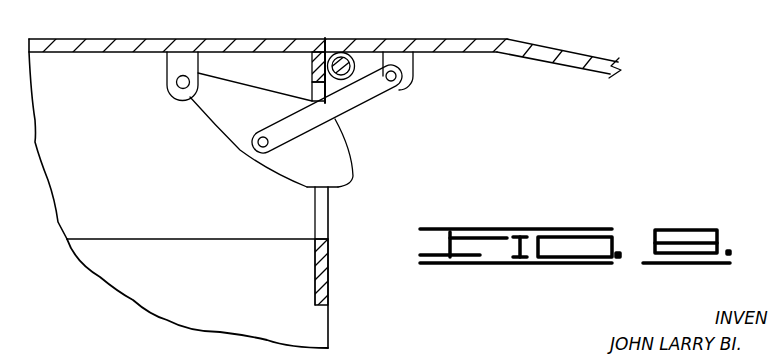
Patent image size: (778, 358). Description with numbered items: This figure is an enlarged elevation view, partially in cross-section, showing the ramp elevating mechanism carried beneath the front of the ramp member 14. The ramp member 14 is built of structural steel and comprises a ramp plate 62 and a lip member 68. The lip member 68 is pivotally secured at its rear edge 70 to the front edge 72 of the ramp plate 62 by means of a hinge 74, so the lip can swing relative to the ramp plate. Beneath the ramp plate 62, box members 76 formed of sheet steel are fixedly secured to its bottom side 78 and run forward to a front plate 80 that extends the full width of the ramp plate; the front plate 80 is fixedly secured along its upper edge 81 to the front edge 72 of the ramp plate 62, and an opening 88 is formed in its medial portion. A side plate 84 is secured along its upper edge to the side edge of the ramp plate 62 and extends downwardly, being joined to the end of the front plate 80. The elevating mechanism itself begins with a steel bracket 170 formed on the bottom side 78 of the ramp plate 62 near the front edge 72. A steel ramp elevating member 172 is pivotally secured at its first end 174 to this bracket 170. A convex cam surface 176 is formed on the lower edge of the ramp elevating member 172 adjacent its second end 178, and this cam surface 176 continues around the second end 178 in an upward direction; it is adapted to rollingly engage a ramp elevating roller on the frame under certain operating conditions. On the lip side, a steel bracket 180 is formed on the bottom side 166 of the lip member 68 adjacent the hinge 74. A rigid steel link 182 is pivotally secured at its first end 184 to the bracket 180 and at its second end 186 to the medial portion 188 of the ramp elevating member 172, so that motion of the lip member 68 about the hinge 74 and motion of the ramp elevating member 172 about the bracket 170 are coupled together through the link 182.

The ramp member 14 is at (100, 30).
The ramp plate 62 is at (47, 38).
The lip member 68 is at (563, 50).
The bottom side of the lip member 166 is at (556, 70).
The bottom side of the ramp plate 78 is at (58, 56).
The box members 76 is at (121, 241).
The side plate 84 is at (187, 334).
The front plate 80 is at (327, 262).
The steel bracket 170 is at (166, 72).
The first end of the ramp elevating member 174 is at (186, 102).
The ramp elevating member 172 is at (251, 112).
The medial portion of the ramp elevating member 188 is at (236, 143).
The convex cam surface 176 is at (298, 188).
The second end of the ramp elevating member 178 is at (356, 179).
The rigid steel link 182 is at (350, 108).
The second end of the link 186 is at (276, 145).
The first end of the link 184 is at (404, 90).
The steel bracket 180 is at (414, 66).
The front edge of the ramp plate 72 is at (325, 38).
The upper edge of the front plate 81 is at (312, 66).
The opening 88 is at (313, 84).
The rear edge of the lip member 70 is at (330, 38).
The hinge 74 is at (352, 58).